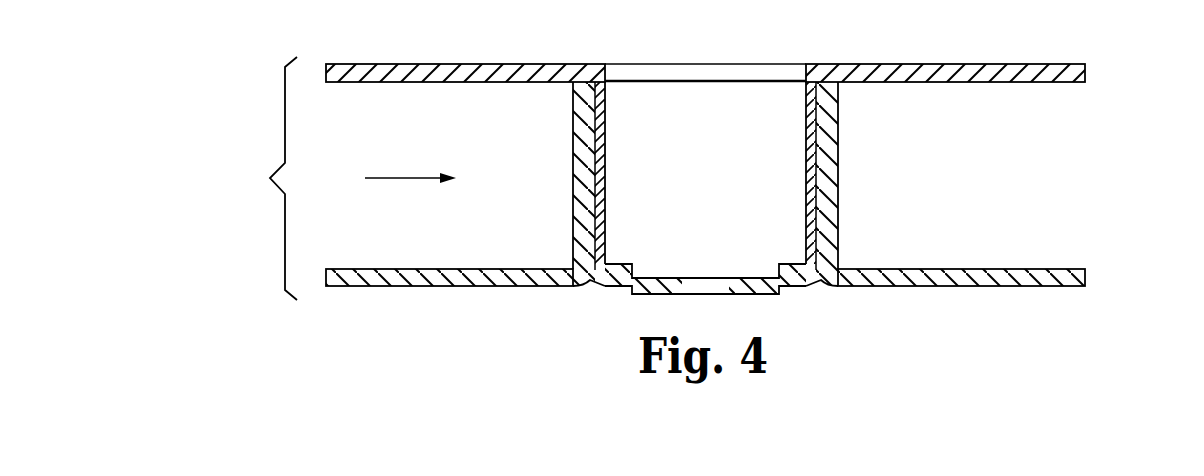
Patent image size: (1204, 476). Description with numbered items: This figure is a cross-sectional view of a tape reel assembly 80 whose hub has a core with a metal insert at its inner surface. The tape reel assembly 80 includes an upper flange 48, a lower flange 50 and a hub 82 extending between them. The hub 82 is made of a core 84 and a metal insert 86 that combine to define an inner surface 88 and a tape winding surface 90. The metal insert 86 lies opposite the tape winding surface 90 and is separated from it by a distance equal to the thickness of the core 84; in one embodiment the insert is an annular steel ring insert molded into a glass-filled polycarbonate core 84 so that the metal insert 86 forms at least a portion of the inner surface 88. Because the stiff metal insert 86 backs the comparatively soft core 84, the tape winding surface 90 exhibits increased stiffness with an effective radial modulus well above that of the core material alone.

The upper flange 48 is at (1086, 73).
The lower flange 50 is at (1086, 278).
The tape reel assembly 80 is at (265, 178).
The hub 82 is at (391, 179).
The core 84 is at (573, 178).
The metal insert 86 is at (606, 100).
The inner surface 88 is at (606, 208).
The tape winding surface 90 is at (573, 242).